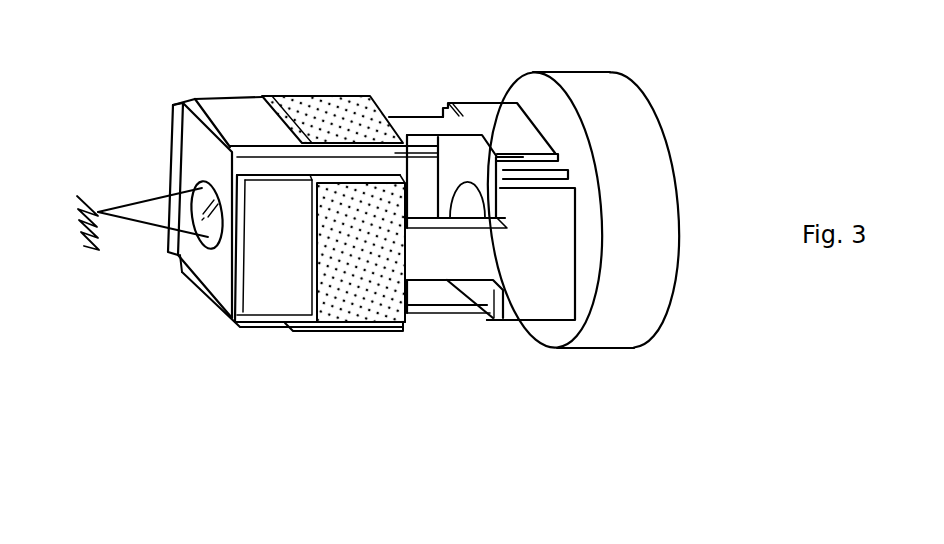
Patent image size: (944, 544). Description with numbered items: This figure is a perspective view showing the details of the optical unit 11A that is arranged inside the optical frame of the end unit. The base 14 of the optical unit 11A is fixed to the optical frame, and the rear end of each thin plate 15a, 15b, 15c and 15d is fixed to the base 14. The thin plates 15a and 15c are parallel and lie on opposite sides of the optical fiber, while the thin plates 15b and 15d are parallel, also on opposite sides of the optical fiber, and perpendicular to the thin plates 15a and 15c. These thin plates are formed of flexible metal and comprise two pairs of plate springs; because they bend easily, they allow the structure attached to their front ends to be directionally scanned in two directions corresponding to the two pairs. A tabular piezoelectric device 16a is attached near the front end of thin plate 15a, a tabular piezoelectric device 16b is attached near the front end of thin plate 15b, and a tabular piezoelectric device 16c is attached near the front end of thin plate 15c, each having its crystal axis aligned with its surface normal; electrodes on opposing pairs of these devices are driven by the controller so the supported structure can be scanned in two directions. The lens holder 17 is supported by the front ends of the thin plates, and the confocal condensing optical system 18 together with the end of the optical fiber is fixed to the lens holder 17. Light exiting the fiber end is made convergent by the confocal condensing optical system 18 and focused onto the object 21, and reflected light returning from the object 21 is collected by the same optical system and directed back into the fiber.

The optical unit 11A is at (542, 378).
The base 14 is at (583, 87).
The thin plate 15a is at (490, 115).
The thin plate 15b is at (450, 263).
The thin plate 15c is at (422, 297).
The thin plate 15d is at (418, 175).
The tabular piezoelectric device 16a is at (322, 100).
The tabular piezoelectric device 16b is at (347, 300).
The tabular piezoelectric device 16c is at (308, 338).
The lens holder 17 is at (193, 133).
The confocal condensing optical system 18 is at (202, 187).
The object 21 is at (90, 197).